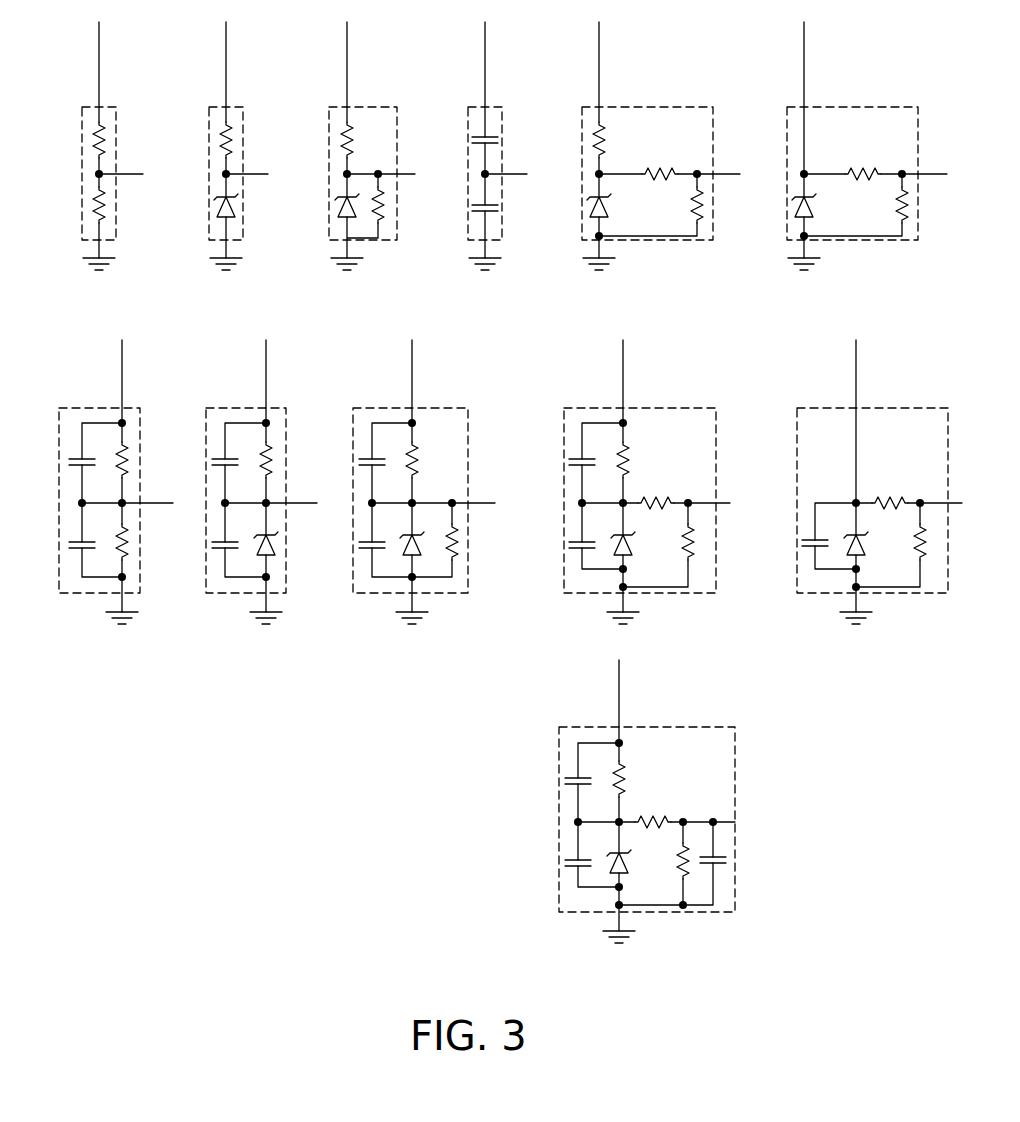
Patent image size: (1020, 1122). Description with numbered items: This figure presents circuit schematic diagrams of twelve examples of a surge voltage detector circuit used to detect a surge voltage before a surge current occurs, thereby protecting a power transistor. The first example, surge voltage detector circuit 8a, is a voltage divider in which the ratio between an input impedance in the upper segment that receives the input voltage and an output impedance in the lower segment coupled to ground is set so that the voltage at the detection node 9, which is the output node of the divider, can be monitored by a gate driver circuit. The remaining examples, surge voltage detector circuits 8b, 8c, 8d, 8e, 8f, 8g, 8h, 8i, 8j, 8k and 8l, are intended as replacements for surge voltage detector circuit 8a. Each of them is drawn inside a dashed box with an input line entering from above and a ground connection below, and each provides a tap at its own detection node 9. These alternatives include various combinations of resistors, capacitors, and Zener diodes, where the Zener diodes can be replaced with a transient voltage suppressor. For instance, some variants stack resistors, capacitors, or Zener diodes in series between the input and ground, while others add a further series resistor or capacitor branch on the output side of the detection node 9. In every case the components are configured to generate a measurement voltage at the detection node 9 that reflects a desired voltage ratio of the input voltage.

The surge voltage detector circuit 8a is at (90, 107).
The surge voltage detector circuit 8b is at (215, 107).
The surge voltage detector circuit 8c is at (368, 107).
The surge voltage detector circuit 8d is at (473, 107).
The surge voltage detector circuit 8e is at (655, 107).
The surge voltage detector circuit 8f is at (861, 107).
The surge voltage detector circuit 8g is at (98, 408).
The surge voltage detector circuit 8h is at (245, 408).
The surge voltage detector circuit 8i is at (392, 408).
The surge voltage detector circuit 8j is at (604, 408).
The surge voltage detector circuit 8k is at (836, 408).
The surge voltage detector circuit 8l is at (650, 727).
The detection node 9 is at (99, 174).